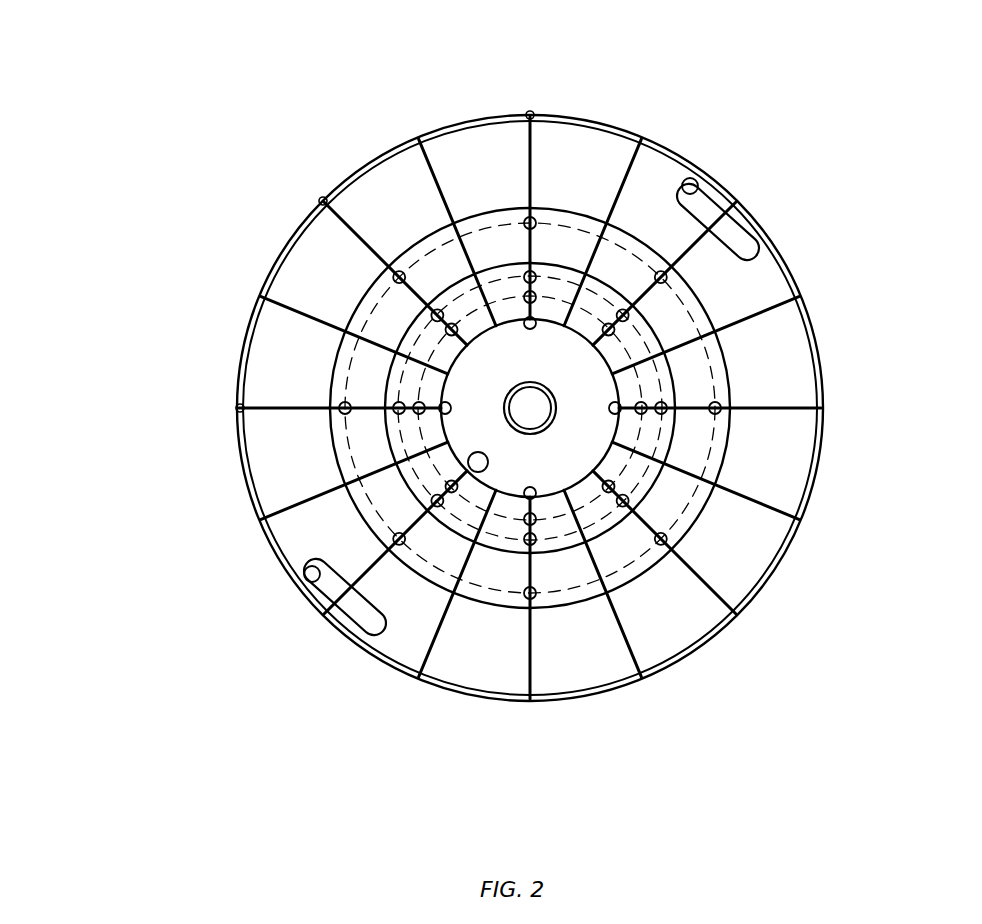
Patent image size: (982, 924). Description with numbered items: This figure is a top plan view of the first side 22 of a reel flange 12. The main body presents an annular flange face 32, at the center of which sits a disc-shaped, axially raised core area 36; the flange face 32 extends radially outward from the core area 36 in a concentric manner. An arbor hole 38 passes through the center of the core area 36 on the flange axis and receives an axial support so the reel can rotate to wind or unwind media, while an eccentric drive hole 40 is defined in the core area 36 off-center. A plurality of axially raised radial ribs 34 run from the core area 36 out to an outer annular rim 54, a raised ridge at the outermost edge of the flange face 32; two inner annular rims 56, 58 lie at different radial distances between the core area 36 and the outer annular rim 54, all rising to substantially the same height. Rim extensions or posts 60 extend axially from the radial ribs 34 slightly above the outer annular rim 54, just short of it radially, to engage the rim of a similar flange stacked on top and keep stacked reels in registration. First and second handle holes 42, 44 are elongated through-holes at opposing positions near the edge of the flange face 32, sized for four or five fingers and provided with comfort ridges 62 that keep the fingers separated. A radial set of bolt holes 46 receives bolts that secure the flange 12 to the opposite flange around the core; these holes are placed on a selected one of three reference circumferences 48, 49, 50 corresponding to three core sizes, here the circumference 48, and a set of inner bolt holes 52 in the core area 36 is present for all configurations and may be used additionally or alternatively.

The flange 12 is at (135, 545).
The first side 22 is at (190, 603).
The flange face 32 is at (563, 147).
The radially extending ribs 34 is at (300, 303).
The core area 36 is at (598, 397).
The arbor hole 38 is at (528, 383).
The drive hole 40 is at (435, 505).
The first handle hole 42 is at (300, 585).
The second handle hole 44 is at (688, 177).
The radial set of bolt holes 46 is at (298, 290).
The circumference 48 is at (665, 548).
The circumference 49 is at (627, 508).
The circumference 50 is at (612, 495).
The inner bolt holes 52 is at (570, 320).
The outer annular rim 54 is at (657, 497).
The inner annular rim 56 is at (640, 520).
The inner annular rim 58 is at (622, 510).
The rim extensions 60 is at (333, 200).
The comfort ridges 62 is at (745, 225).